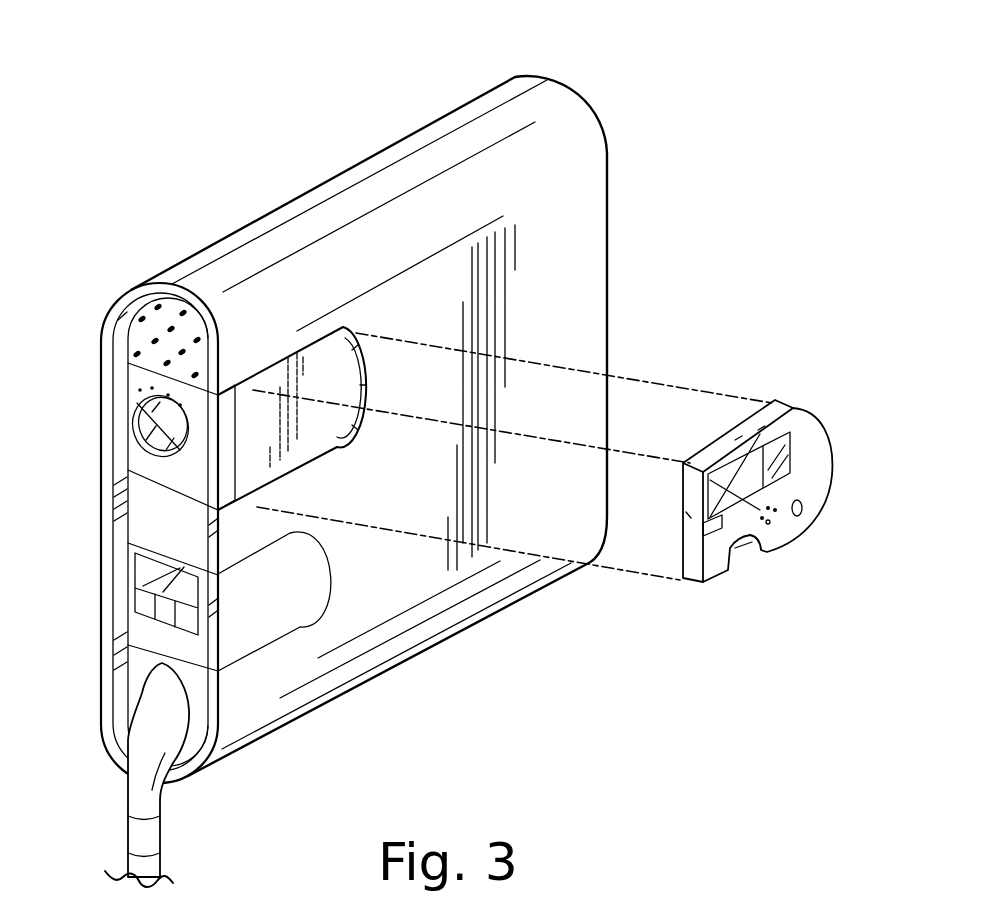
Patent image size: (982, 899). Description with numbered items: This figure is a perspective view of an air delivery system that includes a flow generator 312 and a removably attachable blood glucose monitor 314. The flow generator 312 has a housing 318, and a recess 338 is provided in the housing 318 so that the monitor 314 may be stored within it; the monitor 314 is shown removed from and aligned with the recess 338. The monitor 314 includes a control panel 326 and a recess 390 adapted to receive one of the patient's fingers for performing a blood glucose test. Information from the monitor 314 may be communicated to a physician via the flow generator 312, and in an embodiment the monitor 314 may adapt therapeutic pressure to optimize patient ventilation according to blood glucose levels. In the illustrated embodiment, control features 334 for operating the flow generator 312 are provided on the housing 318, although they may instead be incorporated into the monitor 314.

The flow generator 312 is at (319, 451).
The housing 318 is at (497, 128).
The recess 338 is at (343, 327).
The control features 334 is at (120, 407).
The blood glucose monitor 314 is at (782, 466).
The control panel 326 is at (800, 462).
The recess 390 is at (747, 553).